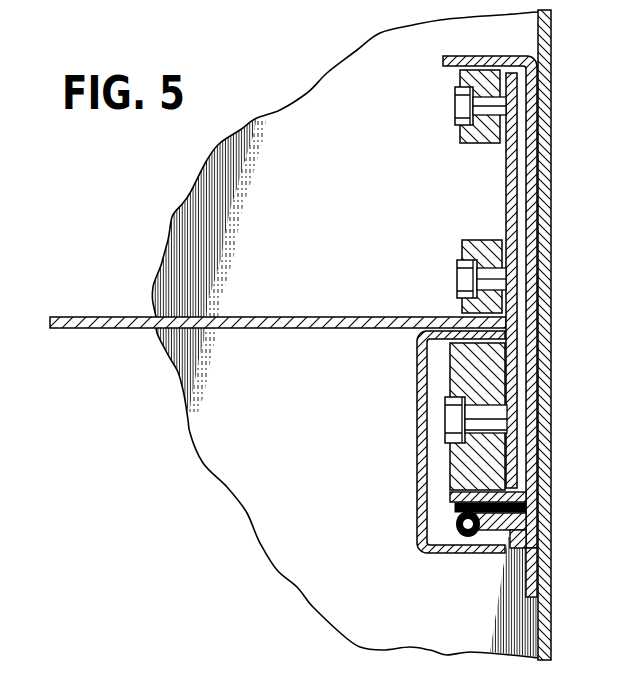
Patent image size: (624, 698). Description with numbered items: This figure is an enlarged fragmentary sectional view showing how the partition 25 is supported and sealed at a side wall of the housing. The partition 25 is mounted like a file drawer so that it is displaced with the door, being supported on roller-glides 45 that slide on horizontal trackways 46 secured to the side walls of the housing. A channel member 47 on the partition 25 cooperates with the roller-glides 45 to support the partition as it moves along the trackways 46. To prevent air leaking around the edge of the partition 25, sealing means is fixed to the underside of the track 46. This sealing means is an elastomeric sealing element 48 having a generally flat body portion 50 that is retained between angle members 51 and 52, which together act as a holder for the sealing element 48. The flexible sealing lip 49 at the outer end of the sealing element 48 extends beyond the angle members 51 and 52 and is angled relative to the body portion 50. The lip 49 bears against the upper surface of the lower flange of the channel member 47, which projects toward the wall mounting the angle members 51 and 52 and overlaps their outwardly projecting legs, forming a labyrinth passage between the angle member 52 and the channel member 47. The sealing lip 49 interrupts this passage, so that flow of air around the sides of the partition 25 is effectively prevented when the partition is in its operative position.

The partition 25 is at (88, 317).
The roller-glide 45 is at (521, 381).
The trackway 46 is at (478, 57).
The channel member 47 is at (417, 412).
The elastomeric sealing element 48 is at (527, 513).
The sealing lip 49 is at (466, 553).
The body portion 50 is at (526, 498).
The angle member 51 is at (548, 591).
The angle member 52 is at (546, 553).